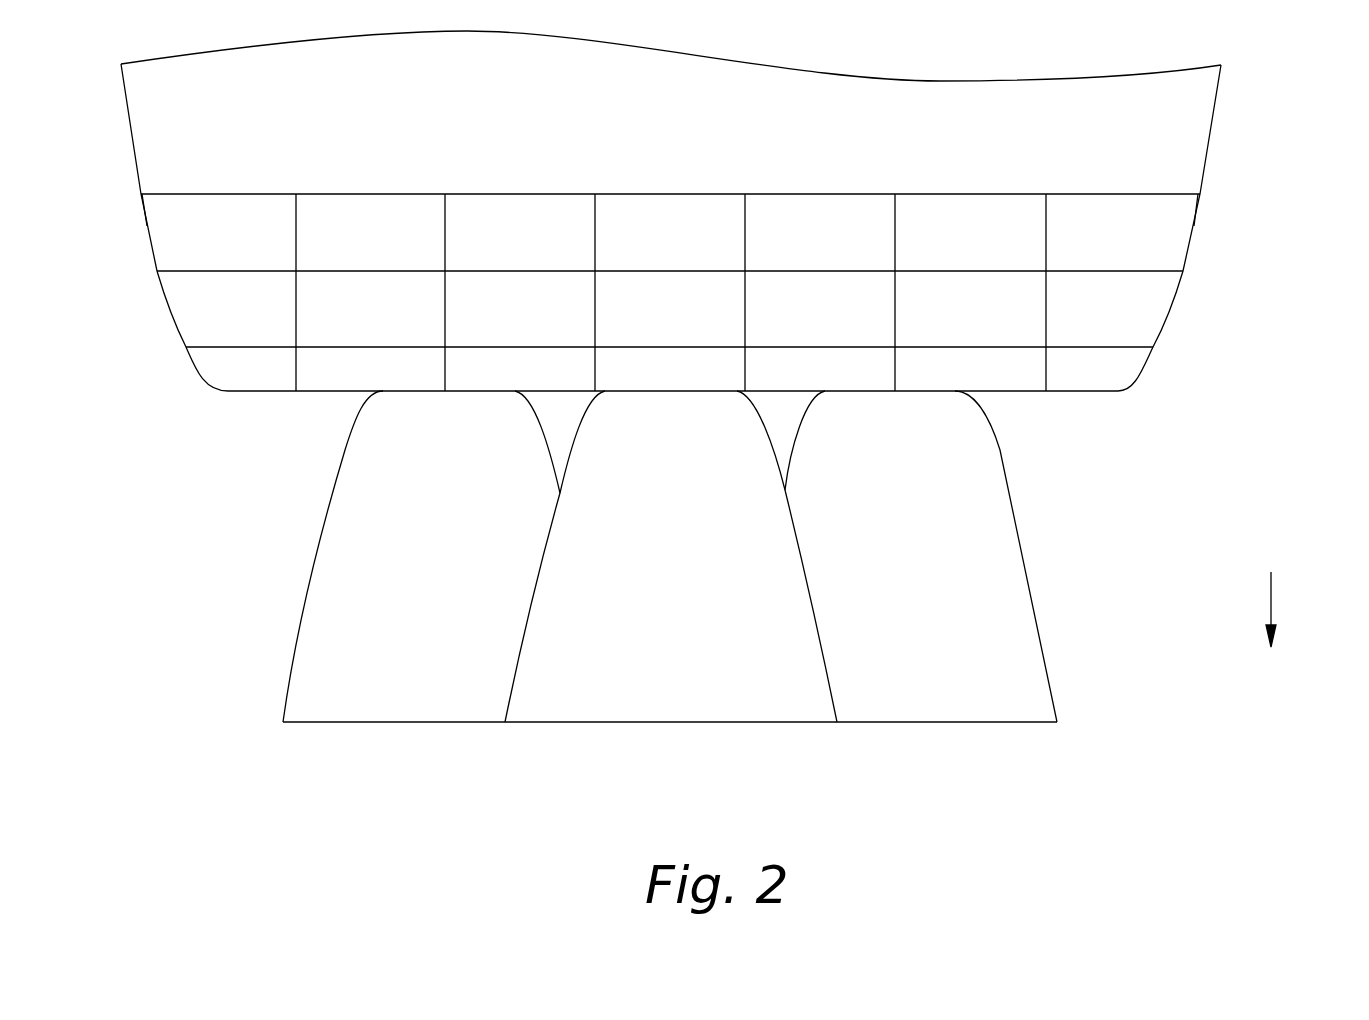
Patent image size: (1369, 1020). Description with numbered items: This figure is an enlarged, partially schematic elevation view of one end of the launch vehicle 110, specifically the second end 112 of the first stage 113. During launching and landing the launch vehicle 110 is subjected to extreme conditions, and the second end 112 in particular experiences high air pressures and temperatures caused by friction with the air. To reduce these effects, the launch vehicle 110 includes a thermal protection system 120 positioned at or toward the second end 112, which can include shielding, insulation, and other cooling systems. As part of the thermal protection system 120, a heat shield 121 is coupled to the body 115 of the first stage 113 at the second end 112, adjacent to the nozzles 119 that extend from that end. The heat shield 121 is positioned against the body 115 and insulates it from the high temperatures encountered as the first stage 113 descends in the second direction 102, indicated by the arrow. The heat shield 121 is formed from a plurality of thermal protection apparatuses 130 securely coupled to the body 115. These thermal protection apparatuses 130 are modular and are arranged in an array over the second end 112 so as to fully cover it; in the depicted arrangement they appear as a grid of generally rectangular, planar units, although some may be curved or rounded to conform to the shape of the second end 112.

The second direction 102 is at (1272, 600).
The launch vehicle 110 is at (703, 438).
The second end 112 is at (637, 618).
The first stage 113 is at (703, 272).
The body 115 is at (127, 133).
The nozzles 119 is at (670, 723).
The thermal protection system 120 is at (1095, 442).
The heat shield 121 is at (167, 312).
The thermal protection apparatuses 130 is at (628, 207).